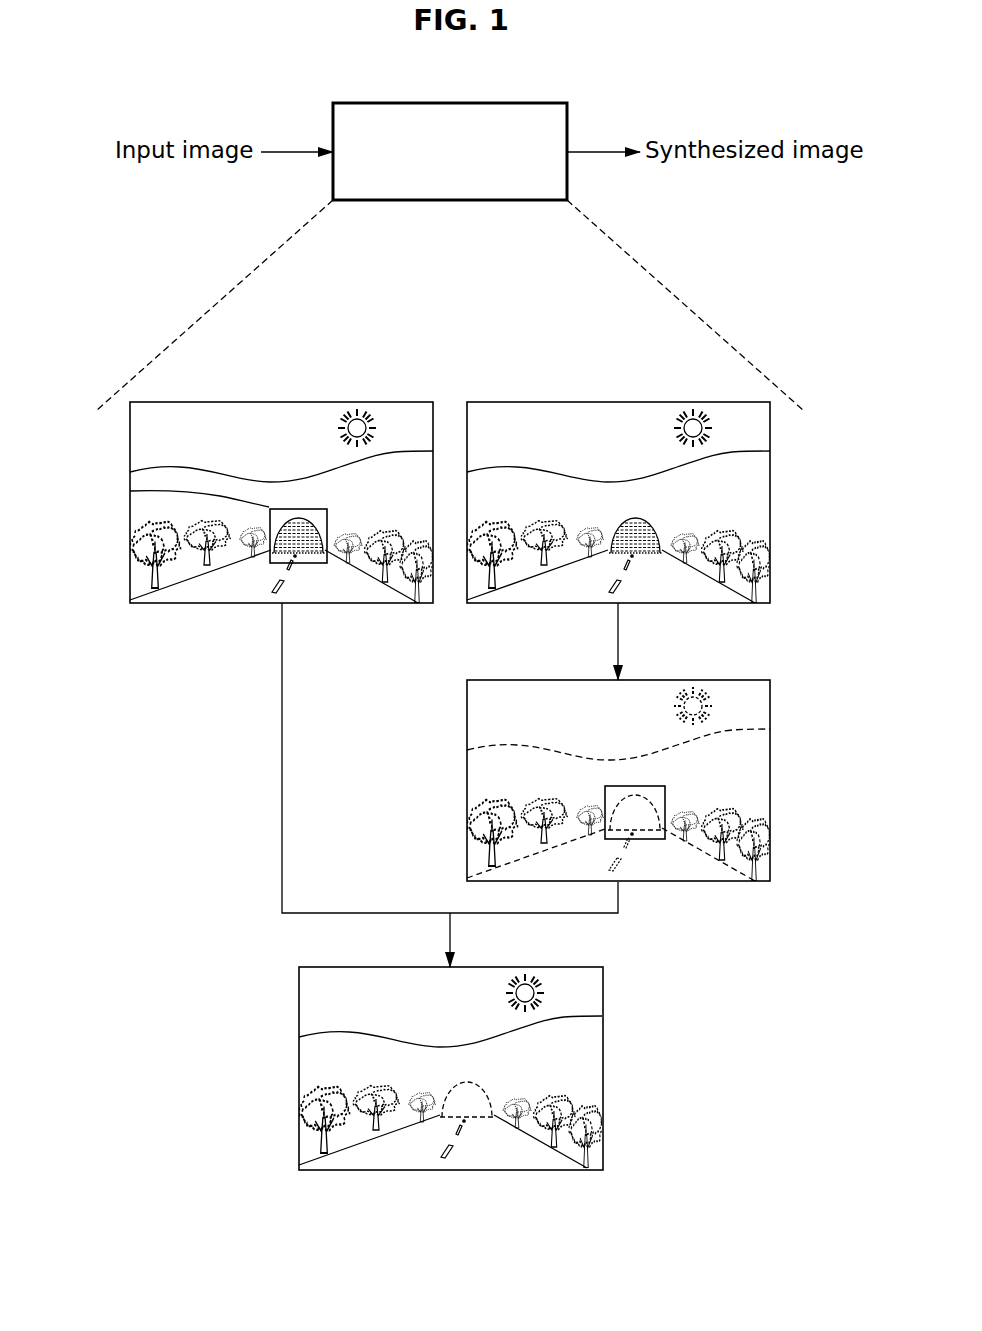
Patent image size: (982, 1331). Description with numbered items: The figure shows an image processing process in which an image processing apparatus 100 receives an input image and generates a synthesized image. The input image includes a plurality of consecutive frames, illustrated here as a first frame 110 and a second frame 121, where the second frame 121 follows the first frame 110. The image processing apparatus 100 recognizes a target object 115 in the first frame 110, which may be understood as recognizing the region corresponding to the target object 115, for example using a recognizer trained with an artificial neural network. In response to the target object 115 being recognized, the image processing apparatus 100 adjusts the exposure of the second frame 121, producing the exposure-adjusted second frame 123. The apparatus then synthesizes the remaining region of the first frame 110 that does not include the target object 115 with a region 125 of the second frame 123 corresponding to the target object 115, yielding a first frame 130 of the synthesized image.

The image processing apparatus 100 is at (450, 103).
The first frame 110 is at (244, 475).
The target object 115 is at (190, 523).
The second frame 121 is at (619, 475).
The second frame with adjusted exposure 123 is at (655, 752).
The region corresponding to the target object 125 is at (724, 792).
The first frame of the synthesized image 130 is at (491, 1049).